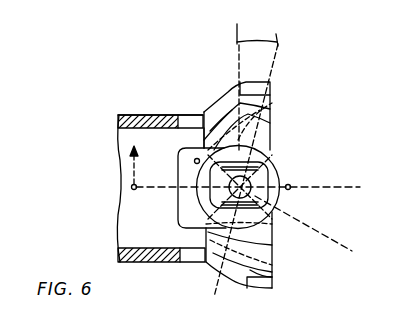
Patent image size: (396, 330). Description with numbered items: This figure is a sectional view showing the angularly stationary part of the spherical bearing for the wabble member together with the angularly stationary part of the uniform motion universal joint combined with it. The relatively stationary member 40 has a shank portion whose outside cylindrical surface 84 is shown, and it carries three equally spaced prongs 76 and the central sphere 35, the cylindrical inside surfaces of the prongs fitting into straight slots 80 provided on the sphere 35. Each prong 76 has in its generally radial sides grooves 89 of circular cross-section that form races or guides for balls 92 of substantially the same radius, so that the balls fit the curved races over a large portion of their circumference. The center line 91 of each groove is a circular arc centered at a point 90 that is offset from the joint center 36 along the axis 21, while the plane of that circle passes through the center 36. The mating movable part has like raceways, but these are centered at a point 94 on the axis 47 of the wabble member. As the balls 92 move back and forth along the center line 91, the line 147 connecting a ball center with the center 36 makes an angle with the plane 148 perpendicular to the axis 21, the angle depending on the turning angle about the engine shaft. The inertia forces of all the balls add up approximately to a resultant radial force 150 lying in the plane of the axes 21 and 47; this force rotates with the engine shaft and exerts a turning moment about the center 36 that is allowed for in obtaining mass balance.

The axis 21 is at (338, 187).
The central sphere 35 is at (275, 170).
The center point 36 is at (210, 207).
The relatively stationary member 40 is at (153, 263).
The axis of wabble member 47 is at (325, 233).
The prongs 76 is at (263, 250).
The straight slots 80 is at (270, 182).
The outside cylindrical surface 84 is at (175, 110).
The grooves 89 is at (268, 272).
The center point of groove arc 90 is at (290, 190).
The center line of groove 91 is at (228, 92).
The balls 92 is at (268, 122).
The center of movable raceways 94 is at (195, 162).
The line connecting ball center with center 147 is at (273, 63).
The plane perpendicular to axis 148 is at (236, 30).
The resultant radial force 150 is at (135, 162).